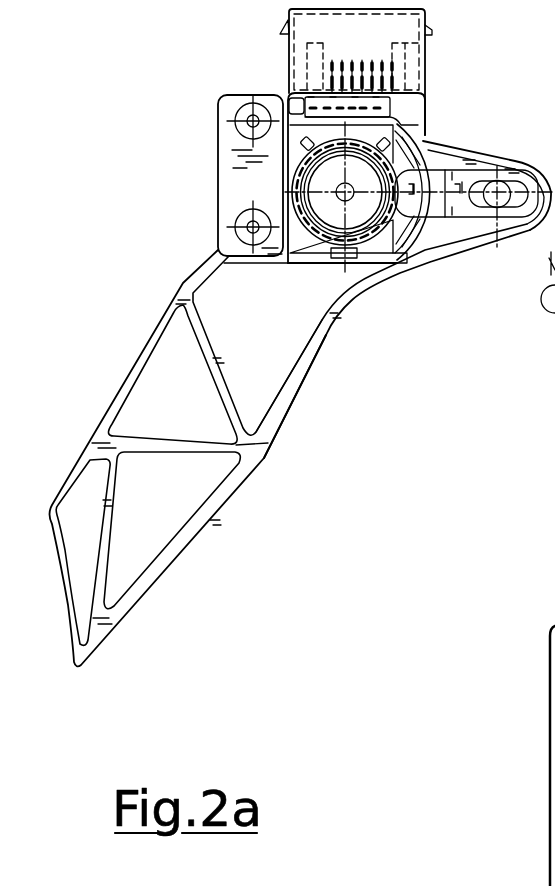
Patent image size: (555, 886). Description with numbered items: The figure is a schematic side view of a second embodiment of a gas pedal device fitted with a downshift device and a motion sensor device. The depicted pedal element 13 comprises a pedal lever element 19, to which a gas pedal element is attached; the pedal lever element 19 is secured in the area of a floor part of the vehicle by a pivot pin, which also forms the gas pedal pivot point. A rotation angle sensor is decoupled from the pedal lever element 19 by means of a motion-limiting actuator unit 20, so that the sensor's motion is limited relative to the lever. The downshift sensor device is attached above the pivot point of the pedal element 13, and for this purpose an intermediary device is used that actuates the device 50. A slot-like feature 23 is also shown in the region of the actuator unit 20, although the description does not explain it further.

The device 50 is at (425, 124).
The motion-limiting actuator unit 20 is at (478, 167).
The slot 23 is at (485, 212).
The pedal element 13 is at (186, 564).
The pedal lever element 19 is at (272, 412).